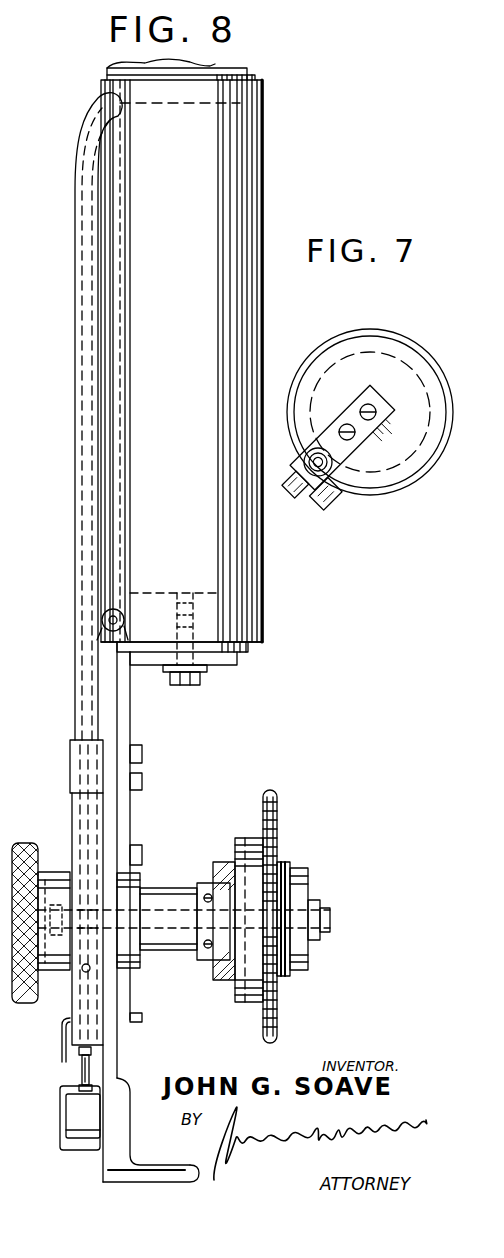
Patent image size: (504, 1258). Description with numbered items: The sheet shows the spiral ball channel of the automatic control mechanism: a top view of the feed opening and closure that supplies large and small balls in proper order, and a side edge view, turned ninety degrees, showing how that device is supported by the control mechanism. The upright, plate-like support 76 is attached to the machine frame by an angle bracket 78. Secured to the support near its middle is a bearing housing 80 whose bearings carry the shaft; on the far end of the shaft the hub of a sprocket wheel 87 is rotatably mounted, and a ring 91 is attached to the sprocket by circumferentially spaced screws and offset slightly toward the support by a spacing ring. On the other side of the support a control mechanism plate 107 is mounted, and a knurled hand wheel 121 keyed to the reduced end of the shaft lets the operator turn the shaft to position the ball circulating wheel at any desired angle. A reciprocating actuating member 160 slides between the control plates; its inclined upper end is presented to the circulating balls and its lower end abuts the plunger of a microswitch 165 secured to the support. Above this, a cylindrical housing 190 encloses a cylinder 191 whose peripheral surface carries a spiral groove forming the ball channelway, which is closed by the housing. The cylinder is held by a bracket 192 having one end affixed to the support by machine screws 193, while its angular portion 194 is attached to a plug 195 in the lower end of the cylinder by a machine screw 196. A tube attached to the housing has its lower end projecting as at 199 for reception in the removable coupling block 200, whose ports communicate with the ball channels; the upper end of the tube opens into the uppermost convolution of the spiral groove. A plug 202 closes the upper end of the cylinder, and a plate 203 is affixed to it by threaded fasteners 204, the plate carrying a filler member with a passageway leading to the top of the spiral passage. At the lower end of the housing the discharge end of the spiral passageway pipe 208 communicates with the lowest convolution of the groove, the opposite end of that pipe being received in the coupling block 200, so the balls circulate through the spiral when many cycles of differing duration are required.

In FIG. 8, the upstanding support 76 is at (115, 1058).
In FIG. 8, the angle bracket 78 is at (127, 1128).
In FIG. 8, the bearing housing 80 is at (182, 951).
In FIG. 8, the sprocket wheel 87 is at (272, 820).
In FIG. 8, the ring 91 is at (252, 1003).
In FIG. 8, the control mechanism plate 107 is at (78, 990).
In FIG. 8, the knurled hand wheel 121 is at (24, 843).
In FIG. 8, the reciprocating actuating member 160 is at (84, 1058).
In FIG. 8, the microswitch 165 is at (75, 1120).
In FIG. 8, the cylindrical housing 190 is at (240, 232).
In FIG. 8, the cylinder 191 is at (242, 208).
In FIG. 8, the bracket 192 is at (125, 720).
In FIG. 8, the machine screws 193 is at (143, 779).
In FIG. 8, the angular portion 194 is at (228, 658).
In FIG. 8, the plug 195 is at (252, 613).
In FIG. 8, the machine screw 196 is at (199, 685).
In FIG. 8, the projecting lower end of tube 199 is at (85, 600).
In FIG. 8, the removable coupling block 200 is at (88, 770).
In FIG. 7, the plug 202 is at (390, 367).
In FIG. 8, the plate 203 is at (195, 70).
In FIG. 7, the plate 203 is at (372, 428).
In FIG. 7, the threaded fasteners 204 is at (362, 405).
In FIG. 8, the spiral passageway pipe 208 is at (135, 624).